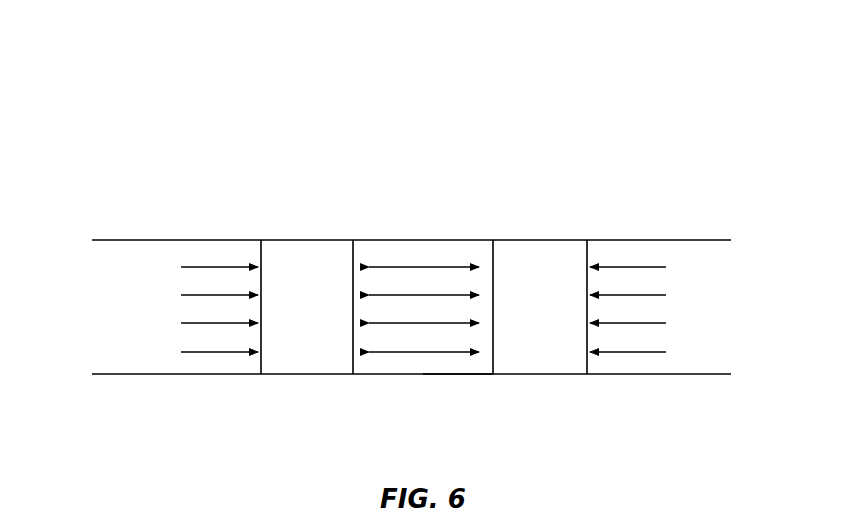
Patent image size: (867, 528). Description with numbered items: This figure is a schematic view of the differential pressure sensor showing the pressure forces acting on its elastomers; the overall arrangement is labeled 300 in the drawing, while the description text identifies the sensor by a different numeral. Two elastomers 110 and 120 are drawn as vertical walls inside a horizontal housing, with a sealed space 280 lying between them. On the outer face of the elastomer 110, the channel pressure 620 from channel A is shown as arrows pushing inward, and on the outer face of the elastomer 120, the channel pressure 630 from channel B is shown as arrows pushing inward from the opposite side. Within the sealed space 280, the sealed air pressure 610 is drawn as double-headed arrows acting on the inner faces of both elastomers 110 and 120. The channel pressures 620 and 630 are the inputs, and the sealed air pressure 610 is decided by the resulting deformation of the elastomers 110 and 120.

The battery cell / system 300 is at (138, 145).
The elastomer 110 is at (302, 248).
The elastomer 120 is at (550, 248).
The sealed space 280 is at (423, 375).
The sealed air pressure 610 is at (420, 257).
The channel pressure 620 is at (208, 257).
The channel pressure 630 is at (623, 258).